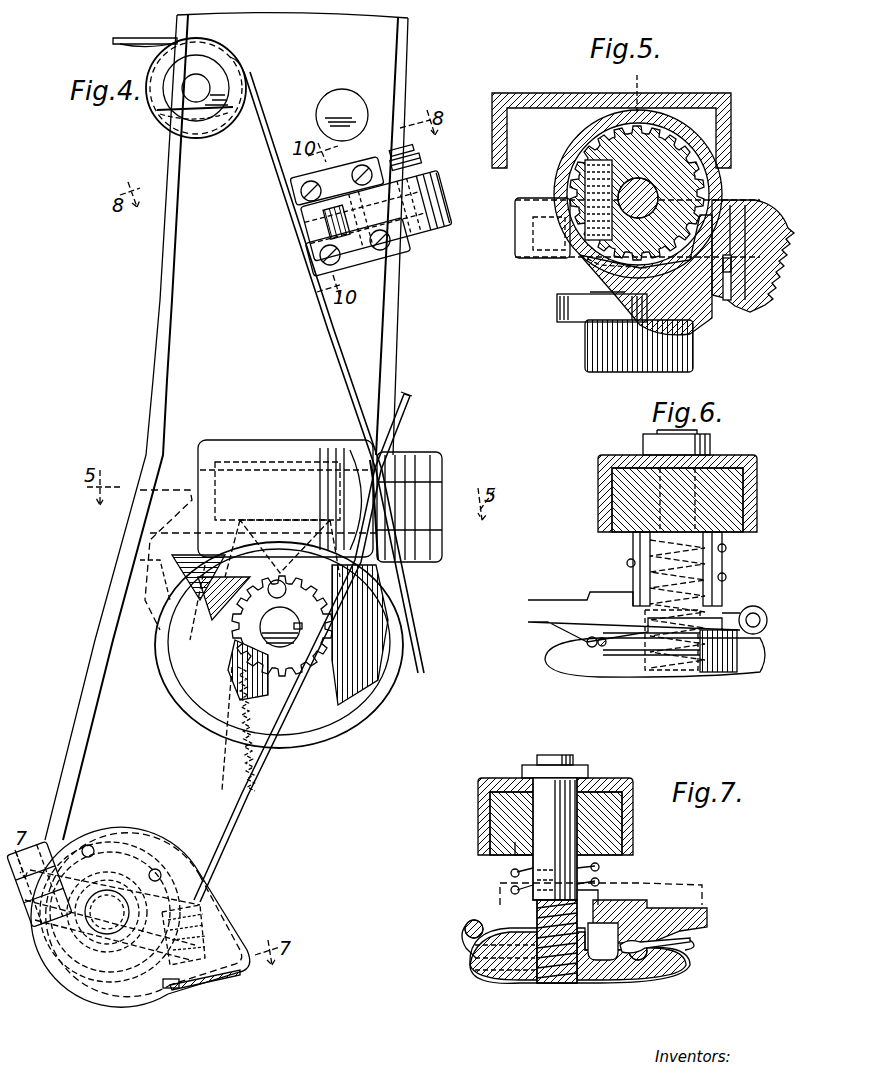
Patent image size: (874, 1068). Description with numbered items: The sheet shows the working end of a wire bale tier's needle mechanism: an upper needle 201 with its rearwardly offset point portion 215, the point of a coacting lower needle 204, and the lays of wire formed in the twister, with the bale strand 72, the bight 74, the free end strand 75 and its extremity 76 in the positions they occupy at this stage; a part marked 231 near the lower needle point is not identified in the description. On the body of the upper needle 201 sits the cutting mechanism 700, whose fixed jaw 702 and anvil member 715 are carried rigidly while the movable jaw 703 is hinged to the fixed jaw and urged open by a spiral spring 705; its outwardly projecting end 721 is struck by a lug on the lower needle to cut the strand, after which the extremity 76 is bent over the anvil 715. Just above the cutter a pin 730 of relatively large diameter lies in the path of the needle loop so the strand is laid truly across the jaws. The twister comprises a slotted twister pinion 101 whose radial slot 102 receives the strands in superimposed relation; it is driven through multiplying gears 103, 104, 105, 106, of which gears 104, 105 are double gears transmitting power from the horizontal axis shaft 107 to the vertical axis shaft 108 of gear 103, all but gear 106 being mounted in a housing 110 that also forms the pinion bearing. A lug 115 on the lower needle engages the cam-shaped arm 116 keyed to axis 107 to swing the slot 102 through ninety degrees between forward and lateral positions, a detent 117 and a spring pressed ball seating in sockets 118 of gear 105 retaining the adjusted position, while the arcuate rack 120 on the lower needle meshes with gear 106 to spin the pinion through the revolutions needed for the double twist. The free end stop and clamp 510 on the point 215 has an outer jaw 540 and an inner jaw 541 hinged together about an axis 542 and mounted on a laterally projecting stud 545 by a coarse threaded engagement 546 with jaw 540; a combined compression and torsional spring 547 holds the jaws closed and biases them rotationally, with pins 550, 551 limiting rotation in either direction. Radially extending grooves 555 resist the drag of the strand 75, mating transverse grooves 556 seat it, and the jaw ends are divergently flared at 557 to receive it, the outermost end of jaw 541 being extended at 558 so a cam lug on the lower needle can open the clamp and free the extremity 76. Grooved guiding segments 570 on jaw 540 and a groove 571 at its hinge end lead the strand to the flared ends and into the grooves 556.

In FIG. 4, the bight 74 is at (113, 41).
In FIG. 4, the bale strand 72 is at (327, 333).
In FIG. 4, the free end strand 75 is at (409, 405).
In FIG. 7, the free end strand 75 is at (630, 960).
In FIG. 4, the extremity of the free end strand 76 is at (173, 988).
In FIG. 4, the upper needle 201 is at (160, 292).
In FIG. 4, the lower needle 204 is at (208, 86).
In FIG. 4, the pulley rim 231 is at (212, 138).
In FIG. 4, the pin 730 is at (352, 112).
In FIG. 4, the cutting mechanism 700 is at (376, 221).
In FIG. 4, the fixed jaw 702 is at (370, 252).
In FIG. 4, the movable jaw 703 is at (343, 218).
In FIG. 4, the spiral spring 705 is at (412, 168).
In FIG. 4, the anvil member 715 is at (318, 172).
In FIG. 4, the outwardly projecting end of the movable jaw 721 is at (315, 236).
In FIG. 4, the slotted twister pinion 101 is at (428, 502).
In FIG. 5, the slotted twister pinion 101 is at (740, 290).
In FIG. 4, the radial slot 102 is at (380, 475).
In FIG. 5, the radial slot 102 is at (728, 300).
In FIG. 4, the gear 103 is at (270, 470).
In FIG. 5, the gear 103 is at (700, 185).
In FIG. 4, the double gear 104 is at (140, 534).
In FIG. 5, the double gear 104 is at (640, 105).
In FIG. 4, the double bevel gear 105 is at (360, 624).
In FIG. 5, the double bevel gear 105 is at (518, 243).
In FIG. 4, the twister driving gear 106 is at (305, 640).
In FIG. 5, the twister driving gear 106 is at (598, 350).
In FIG. 4, the axis shaft 107 is at (299, 630).
In FIG. 5, the axis shaft 107 is at (590, 292).
In FIG. 5, the axis shaft 108 is at (620, 182).
In FIG. 4, the housing 110 is at (226, 418).
In FIG. 5, the housing 110 is at (705, 133).
In FIG. 4, the lug 115 is at (125, 575).
In FIG. 4, the cam-shaped arm 116 is at (220, 620).
In FIG. 5, the cam-shaped arm 116 is at (557, 310).
In FIG. 4, the detent 117 is at (385, 580).
In FIG. 5, the detent 117 is at (554, 196).
In FIG. 4, the sockets 118 is at (200, 672).
In FIG. 5, the sockets 118 is at (590, 268).
In FIG. 4, the arcuate rack 120 is at (270, 770).
In FIG. 6, the point portion of the needle 215 is at (600, 522).
In FIG. 7, the point portion of the needle 215 is at (478, 813).
In FIG. 4, the free end stop and clamp 510 is at (139, 911).
In FIG. 6, the free end stop and clamp 510 is at (655, 665).
In FIG. 7, the free end stop and clamp 510 is at (481, 947).
In FIG. 7, the outer jaw 540 is at (600, 975).
In FIG. 7, the inner jaw 541 is at (645, 898).
In FIG. 7, the hinge axis 542 is at (470, 920).
In FIG. 4, the mounting stud 545 is at (107, 920).
In FIG. 7, the mounting stud 545 is at (547, 800).
In FIG. 7, the coarse threaded engagement 546 is at (552, 983).
In FIG. 6, the combined compression and torsional spring 547 is at (722, 548).
In FIG. 7, the combined compression and torsional spring 547 is at (512, 872).
In FIG. 4, the pin 550 is at (160, 875).
In FIG. 6, the pin 550 is at (722, 580).
In FIG. 4, the pin 551 is at (95, 850).
In FIG. 6, the pin 551 is at (640, 572).
In FIG. 4, the radially extending grooves 555 is at (205, 915).
In FIG. 7, the transverse grooves 556 is at (640, 960).
In FIG. 7, the divergently flared ends 557 is at (690, 942).
In FIG. 6, the extension 558 is at (530, 612).
In FIG. 7, the extension 558 is at (708, 922).
In FIG. 4, the grooved guiding segments 570 is at (70, 985).
In FIG. 6, the grooved guiding segments 570 is at (710, 650).
In FIG. 7, the grooved guiding segments 570 is at (505, 978).
In FIG. 7, the groove 571 is at (470, 948).